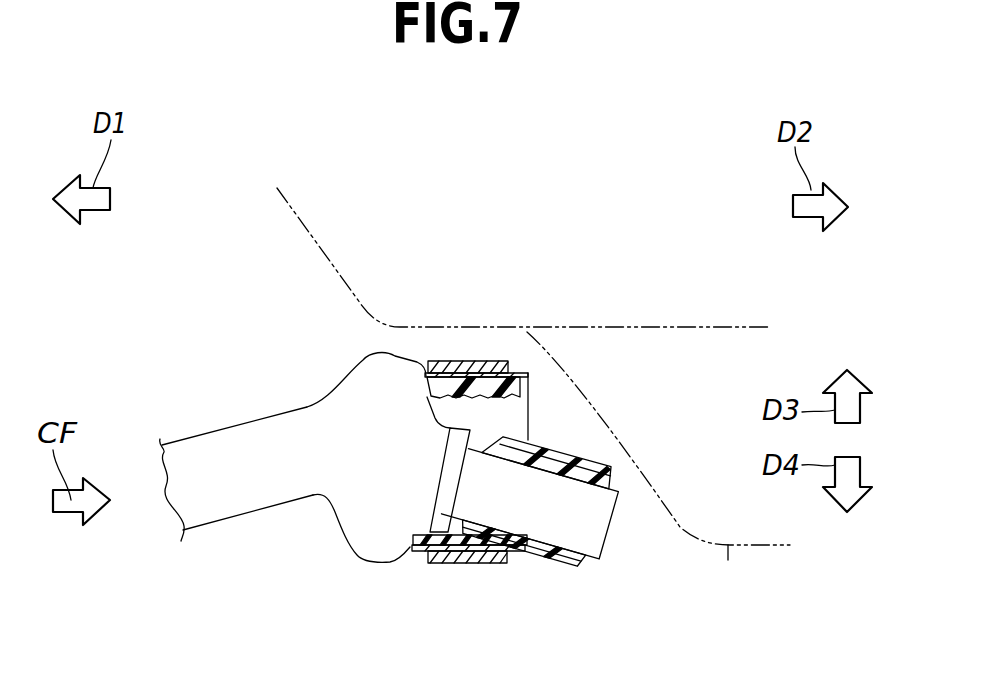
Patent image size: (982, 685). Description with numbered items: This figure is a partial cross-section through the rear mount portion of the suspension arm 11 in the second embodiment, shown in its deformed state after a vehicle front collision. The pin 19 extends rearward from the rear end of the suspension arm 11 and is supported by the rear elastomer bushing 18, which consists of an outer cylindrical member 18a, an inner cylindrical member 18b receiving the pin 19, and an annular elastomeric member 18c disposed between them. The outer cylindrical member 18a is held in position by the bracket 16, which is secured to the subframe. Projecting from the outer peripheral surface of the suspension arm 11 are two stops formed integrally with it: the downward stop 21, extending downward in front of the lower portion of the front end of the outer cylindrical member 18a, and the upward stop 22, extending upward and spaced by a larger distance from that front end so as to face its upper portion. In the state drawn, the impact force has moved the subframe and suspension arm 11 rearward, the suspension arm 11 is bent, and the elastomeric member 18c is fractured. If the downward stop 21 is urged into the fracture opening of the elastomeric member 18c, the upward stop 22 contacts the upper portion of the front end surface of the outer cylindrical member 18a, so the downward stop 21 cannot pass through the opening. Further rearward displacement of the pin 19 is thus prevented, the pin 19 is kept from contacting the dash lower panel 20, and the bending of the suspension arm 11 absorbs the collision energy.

The suspension arm 11 is at (225, 427).
The upward stop 22 is at (383, 370).
The downward stop 21 is at (372, 550).
The bracket 16 is at (475, 362).
The outer cylindrical member 18a is at (528, 373).
The rear elastomer bushing 18 is at (547, 362).
The elastomeric member 18c is at (500, 392).
The inner cylindrical member 18b is at (623, 482).
The pin 19 is at (587, 532).
The dash lower panel 20 is at (728, 548).